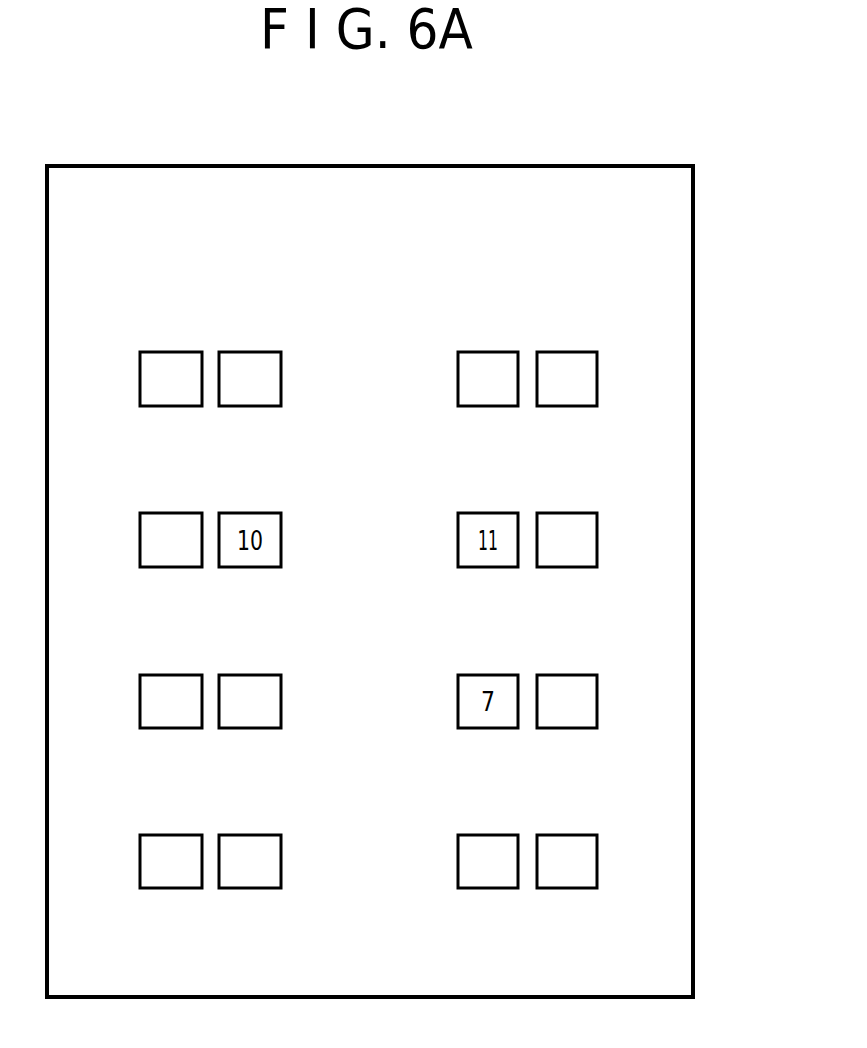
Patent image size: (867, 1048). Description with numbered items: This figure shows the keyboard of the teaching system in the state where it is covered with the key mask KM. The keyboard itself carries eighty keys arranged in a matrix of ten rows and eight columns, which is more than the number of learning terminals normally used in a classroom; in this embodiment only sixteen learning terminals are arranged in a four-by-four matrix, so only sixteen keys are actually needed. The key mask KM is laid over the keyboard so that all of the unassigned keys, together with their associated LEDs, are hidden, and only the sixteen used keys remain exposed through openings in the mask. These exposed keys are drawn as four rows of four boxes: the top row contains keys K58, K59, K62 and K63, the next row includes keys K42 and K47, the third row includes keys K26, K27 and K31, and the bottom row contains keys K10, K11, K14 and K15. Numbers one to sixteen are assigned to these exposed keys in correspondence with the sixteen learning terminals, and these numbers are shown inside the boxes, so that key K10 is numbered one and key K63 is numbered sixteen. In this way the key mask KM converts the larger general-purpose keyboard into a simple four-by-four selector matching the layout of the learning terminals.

The key mask KM is at (676, 540).
The key K58 is at (162, 352).
The key K59 is at (266, 352).
The key K62 is at (488, 352).
The key K63 is at (566, 352).
The key K42 is at (162, 513).
The key K47 is at (566, 513).
The key K26 is at (165, 675).
The key K27 is at (251, 675).
The key K31 is at (558, 675).
The key K10 is at (166, 889).
The key K11 is at (247, 889).
The key K14 is at (488, 889).
The key K15 is at (567, 889).